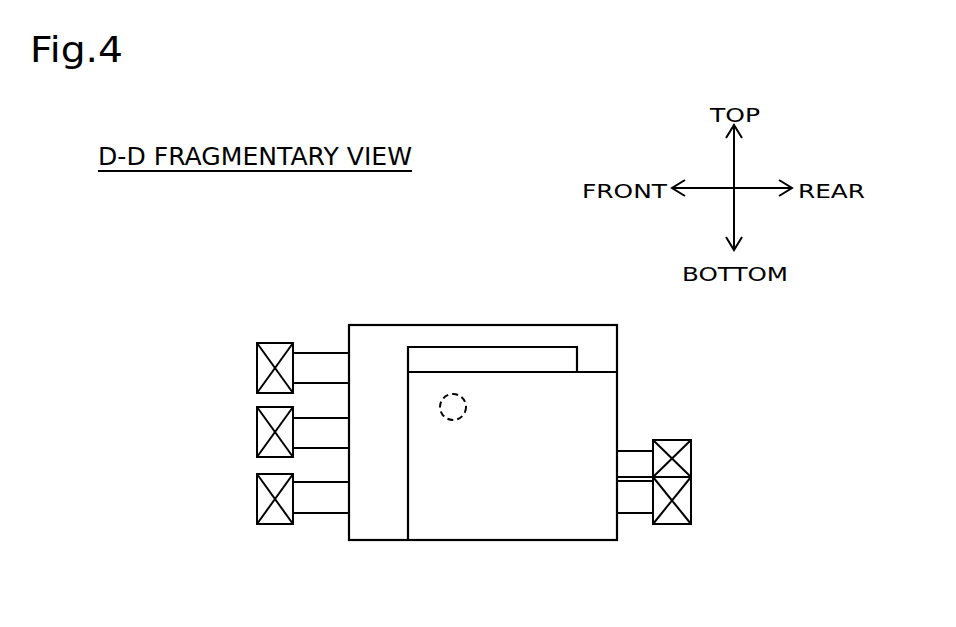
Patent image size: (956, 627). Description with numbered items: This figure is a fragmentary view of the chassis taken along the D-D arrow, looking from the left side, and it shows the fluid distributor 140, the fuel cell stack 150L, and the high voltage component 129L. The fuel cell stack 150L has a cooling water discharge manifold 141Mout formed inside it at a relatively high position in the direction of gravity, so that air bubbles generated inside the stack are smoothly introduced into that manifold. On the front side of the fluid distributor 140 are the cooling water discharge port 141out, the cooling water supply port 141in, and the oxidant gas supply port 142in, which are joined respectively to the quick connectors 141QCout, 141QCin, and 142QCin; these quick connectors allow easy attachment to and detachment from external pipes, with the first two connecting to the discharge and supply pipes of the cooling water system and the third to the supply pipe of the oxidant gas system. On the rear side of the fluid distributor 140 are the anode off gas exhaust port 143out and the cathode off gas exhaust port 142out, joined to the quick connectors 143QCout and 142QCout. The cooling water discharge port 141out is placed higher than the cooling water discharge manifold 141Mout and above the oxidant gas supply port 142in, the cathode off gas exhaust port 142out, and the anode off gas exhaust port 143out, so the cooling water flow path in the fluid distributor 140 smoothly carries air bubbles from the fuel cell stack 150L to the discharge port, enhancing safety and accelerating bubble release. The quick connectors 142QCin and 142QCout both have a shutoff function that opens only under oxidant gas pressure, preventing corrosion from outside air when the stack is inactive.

The fluid distributor 140 is at (403, 398).
The fuel cell stack 150L is at (497, 510).
The high voltage component 129L is at (502, 347).
The cooling water discharge port 141out is at (320, 353).
The cooling water supply port 141in is at (320, 418).
The oxidant gas supply port 142in is at (320, 513).
The quick connector 141QCout is at (257, 372).
The quick connector 141QCin is at (257, 432).
The quick connector 142QCin is at (257, 500).
The anode off gas exhaust port 143out is at (632, 451).
The cathode off gas exhaust port 142out is at (637, 500).
The quick connector 143QCout is at (691, 455).
The quick connector 142QCout is at (691, 498).
The cooling water discharge manifold 141Mout is at (465, 404).